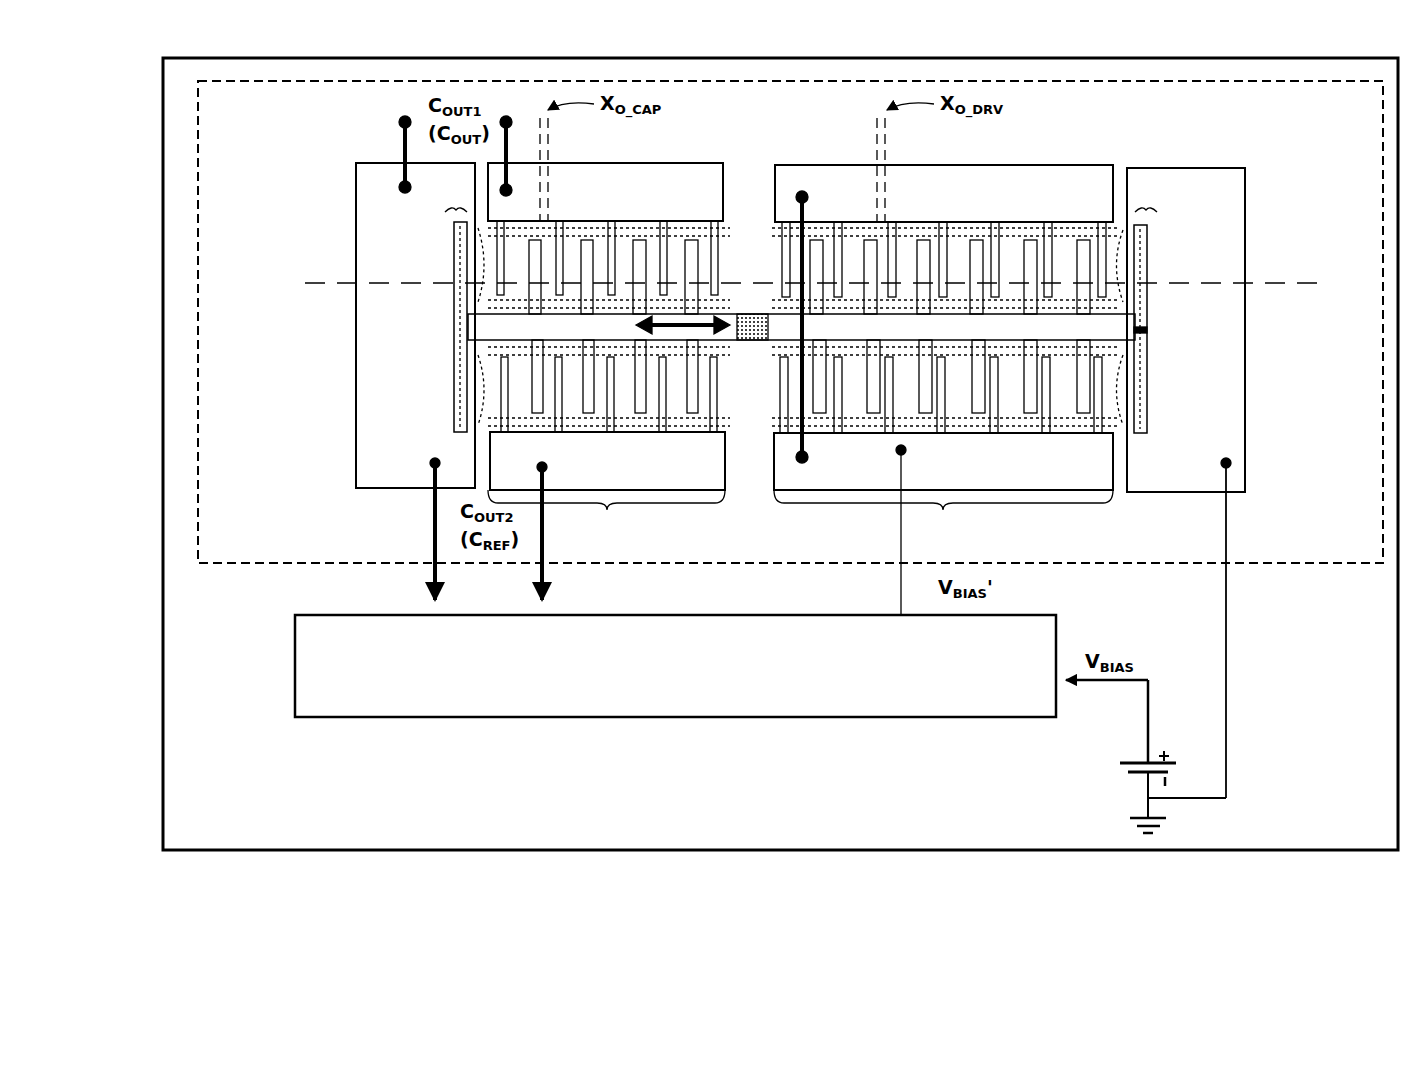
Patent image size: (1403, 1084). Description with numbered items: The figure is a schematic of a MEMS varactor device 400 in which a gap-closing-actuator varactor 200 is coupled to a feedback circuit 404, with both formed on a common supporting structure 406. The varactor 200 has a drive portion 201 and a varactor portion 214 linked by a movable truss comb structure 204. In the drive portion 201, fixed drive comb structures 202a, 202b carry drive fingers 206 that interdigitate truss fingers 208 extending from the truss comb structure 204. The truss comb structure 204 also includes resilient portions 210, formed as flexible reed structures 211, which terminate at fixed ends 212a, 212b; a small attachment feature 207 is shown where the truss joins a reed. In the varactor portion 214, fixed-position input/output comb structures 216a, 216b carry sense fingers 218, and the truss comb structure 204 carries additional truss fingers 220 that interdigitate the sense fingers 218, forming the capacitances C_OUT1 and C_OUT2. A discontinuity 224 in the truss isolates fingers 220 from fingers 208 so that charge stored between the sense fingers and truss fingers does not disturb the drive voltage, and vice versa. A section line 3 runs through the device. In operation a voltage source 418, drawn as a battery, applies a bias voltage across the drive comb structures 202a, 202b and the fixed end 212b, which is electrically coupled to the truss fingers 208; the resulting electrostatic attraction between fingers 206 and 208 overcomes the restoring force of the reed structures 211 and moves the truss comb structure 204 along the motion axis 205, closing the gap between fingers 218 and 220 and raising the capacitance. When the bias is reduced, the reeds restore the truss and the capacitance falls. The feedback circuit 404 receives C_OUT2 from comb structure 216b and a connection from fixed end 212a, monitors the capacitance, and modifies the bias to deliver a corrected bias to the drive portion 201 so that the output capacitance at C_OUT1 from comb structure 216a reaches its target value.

The section line 3 is at (810, 283).
The MEMS varactor 200 is at (790, 322).
The drive portion 201 is at (943, 511).
The drive comb structure 202a is at (944, 314).
The drive comb structure 202b is at (943, 524).
The truss comb structure 204 is at (801, 327).
The motion axis 205 is at (729, 308).
The drive fingers 206 is at (1021, 218).
The beam attachment 207 is at (1152, 330).
The truss fingers 208 is at (1062, 294).
The resilient portions 210 is at (447, 206).
The reed structures 211 is at (455, 236).
The fixed end 212a is at (415, 358).
The fixed end 212b is at (1186, 483).
The varactor portion 214 is at (606, 511).
The input/output comb structure 216a is at (605, 168).
The input/output comb structure 216b is at (607, 516).
The sense fingers 218 is at (524, 219).
The truss fingers 220 is at (518, 294).
The discontinuity 224 is at (752, 346).
The MEMS varactor device 400 is at (765, 919).
The feedback circuit 404 is at (675, 666).
The supporting structure 406 is at (780, 454).
The voltage source 418 is at (1136, 756).